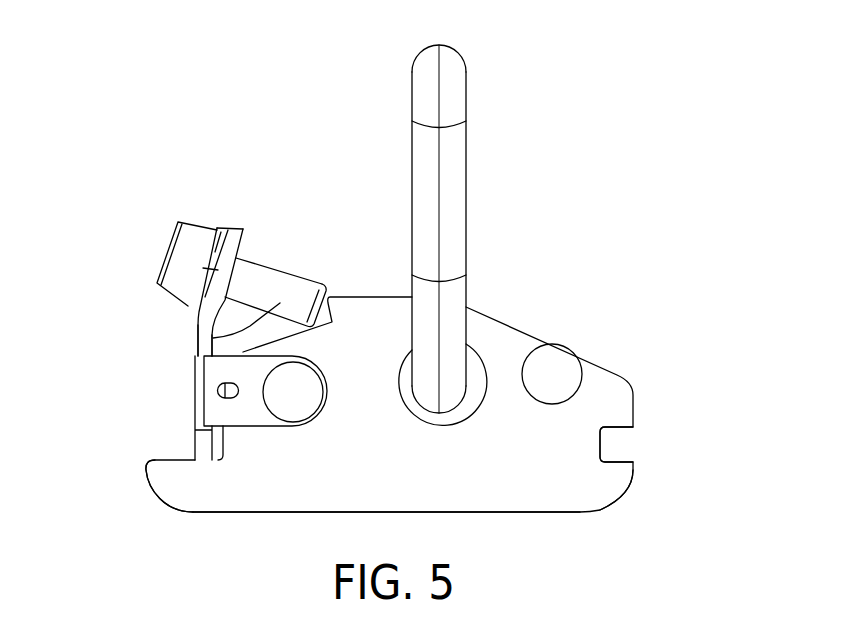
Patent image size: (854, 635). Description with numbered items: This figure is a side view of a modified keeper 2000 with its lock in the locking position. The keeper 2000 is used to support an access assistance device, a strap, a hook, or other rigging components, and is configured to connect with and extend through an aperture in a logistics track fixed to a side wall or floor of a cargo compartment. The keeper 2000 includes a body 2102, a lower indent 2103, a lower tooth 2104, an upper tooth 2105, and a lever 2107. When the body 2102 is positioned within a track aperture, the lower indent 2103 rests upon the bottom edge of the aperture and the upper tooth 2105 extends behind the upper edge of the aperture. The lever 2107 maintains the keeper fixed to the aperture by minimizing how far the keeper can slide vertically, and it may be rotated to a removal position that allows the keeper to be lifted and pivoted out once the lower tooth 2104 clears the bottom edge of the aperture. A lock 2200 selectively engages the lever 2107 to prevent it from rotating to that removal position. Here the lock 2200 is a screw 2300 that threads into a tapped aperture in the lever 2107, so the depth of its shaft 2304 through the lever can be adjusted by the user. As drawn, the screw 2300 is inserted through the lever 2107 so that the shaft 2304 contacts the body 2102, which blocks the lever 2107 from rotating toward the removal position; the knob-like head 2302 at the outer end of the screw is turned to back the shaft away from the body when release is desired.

The keeper 2000 is at (404, 290).
The body 2102 is at (367, 480).
The lower indent 2103 is at (613, 444).
The lower tooth 2104 is at (615, 480).
The upper tooth 2105 is at (168, 472).
The lever 2107 is at (200, 328).
The lock 2200 is at (247, 263).
The screw 2300 is at (317, 285).
The knob 2302 is at (193, 236).
The shaft 2304 is at (196, 346).